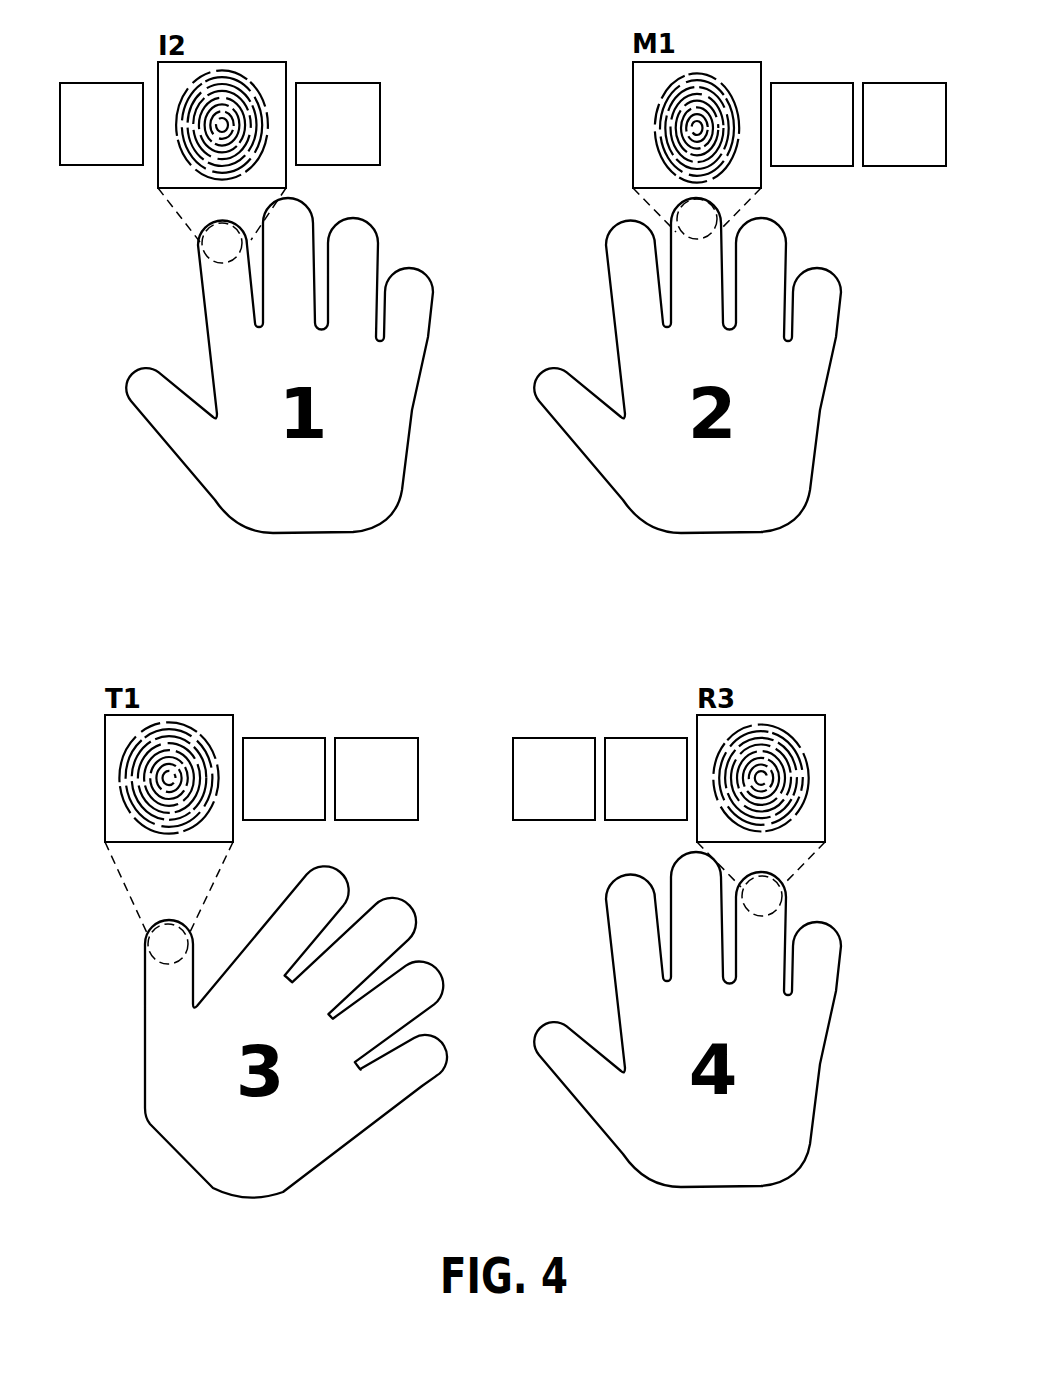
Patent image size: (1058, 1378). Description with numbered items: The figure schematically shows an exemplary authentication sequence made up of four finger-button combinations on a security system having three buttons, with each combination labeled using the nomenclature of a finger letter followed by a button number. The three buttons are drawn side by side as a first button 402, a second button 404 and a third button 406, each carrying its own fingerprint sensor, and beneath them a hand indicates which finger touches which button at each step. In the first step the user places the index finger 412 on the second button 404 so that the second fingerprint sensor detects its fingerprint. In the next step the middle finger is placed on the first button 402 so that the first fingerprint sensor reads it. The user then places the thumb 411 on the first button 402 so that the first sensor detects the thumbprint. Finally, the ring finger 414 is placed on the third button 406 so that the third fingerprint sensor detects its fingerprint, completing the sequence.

The first button 402 is at (102, 83).
The second button 404 is at (220, 62).
The third button 406 is at (338, 83).
The thumb 411 is at (167, 982).
The index finger 412 is at (222, 282).
The ring finger 414 is at (763, 925).